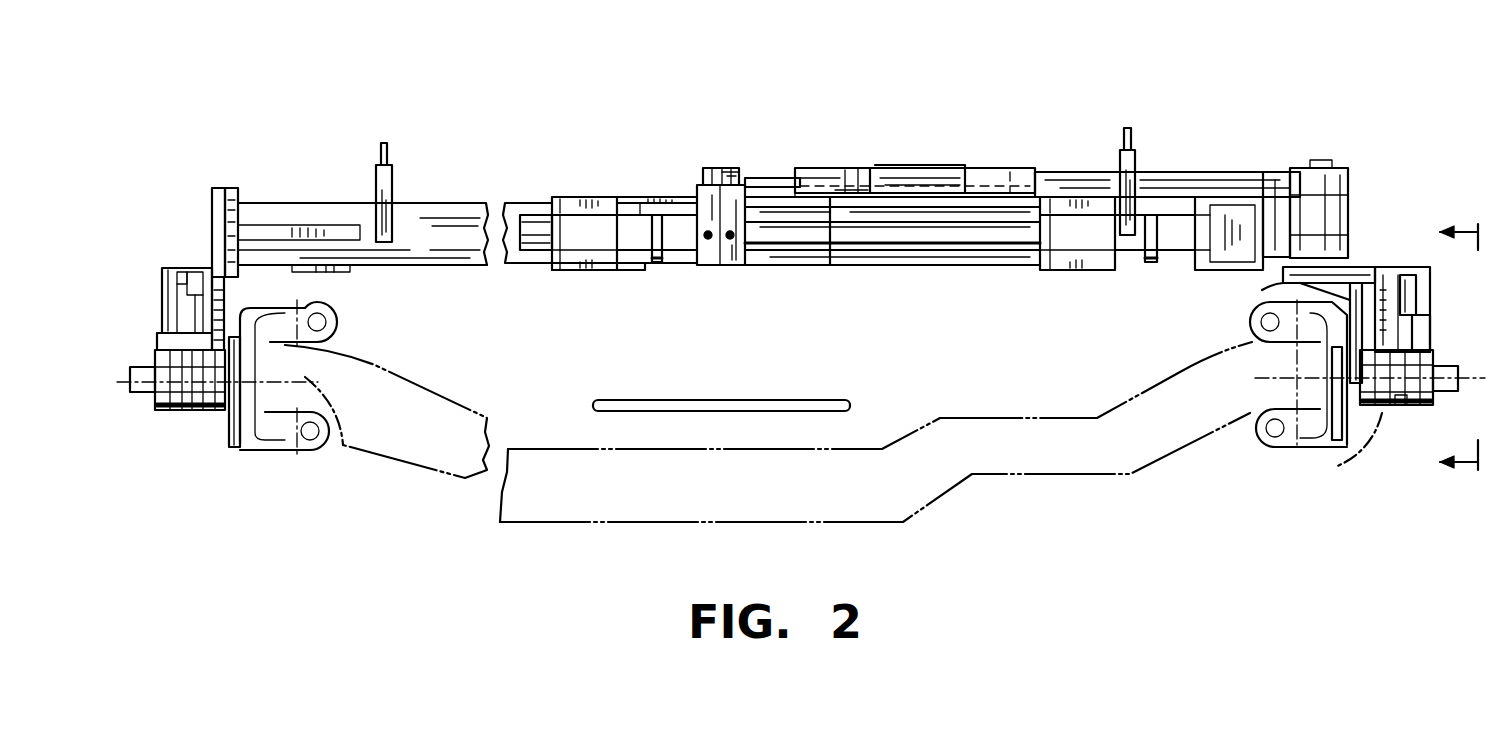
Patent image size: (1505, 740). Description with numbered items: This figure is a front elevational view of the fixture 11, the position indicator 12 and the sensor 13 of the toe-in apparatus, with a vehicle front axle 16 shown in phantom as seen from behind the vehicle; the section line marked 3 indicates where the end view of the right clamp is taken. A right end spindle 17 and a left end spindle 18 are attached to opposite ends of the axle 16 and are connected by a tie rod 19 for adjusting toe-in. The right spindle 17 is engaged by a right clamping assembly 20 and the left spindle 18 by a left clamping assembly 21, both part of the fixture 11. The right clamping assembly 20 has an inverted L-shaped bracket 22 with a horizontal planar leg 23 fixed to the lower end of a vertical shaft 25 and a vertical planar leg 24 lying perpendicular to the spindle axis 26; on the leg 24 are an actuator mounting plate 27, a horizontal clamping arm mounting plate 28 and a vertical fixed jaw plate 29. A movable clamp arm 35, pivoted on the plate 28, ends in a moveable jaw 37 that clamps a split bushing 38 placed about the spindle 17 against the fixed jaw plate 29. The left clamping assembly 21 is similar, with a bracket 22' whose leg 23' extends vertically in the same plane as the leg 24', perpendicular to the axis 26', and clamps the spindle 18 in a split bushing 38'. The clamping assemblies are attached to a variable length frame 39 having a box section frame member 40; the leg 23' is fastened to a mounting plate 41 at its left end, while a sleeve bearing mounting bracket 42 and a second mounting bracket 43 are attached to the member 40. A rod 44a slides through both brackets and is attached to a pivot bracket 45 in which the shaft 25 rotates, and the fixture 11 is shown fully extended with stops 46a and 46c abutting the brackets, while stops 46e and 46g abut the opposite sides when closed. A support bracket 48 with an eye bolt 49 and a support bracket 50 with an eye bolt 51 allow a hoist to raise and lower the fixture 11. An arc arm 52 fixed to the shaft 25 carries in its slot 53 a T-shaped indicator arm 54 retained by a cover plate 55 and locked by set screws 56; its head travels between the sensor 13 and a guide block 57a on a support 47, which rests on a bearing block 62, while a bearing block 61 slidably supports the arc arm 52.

The fixture 11 is at (815, 95).
The position indicator 12 is at (1200, 172).
The sensor 13 is at (722, 178).
The vehicle front axle 16 is at (415, 455).
The right end spindle 17 is at (1460, 395).
The left end spindle 18 is at (142, 400).
The tie rod 19 is at (762, 400).
The right clamping assembly 20 is at (1392, 405).
The left clamping assembly 21 is at (210, 400).
The inverted generally L-shaped bracket 22 is at (1346, 237).
The bracket 22' is at (174, 278).
The horizontally extending planar leg 23 is at (1248, 300).
The leg 23' is at (189, 258).
The vertically extending planar leg 24 is at (1311, 372).
The vertically extending leg 24' is at (301, 360).
The vertically extending shaft 25 is at (1355, 205).
The longitudinal axis 26 is at (1277, 420).
The longitudinal axis 26' is at (303, 442).
The actuator mounting plate 27 is at (1385, 275).
The clamping arm mounting plate 28 is at (1430, 345).
The fixed jaw plate 29 is at (1340, 443).
The movable clamp arm 35 is at (1418, 312).
The moveable jaw 37 is at (1402, 405).
The split bushing 38 is at (1463, 364).
The split bushing 38' is at (215, 342).
The variable length frame 39 is at (518, 203).
The box section frame member 40 is at (510, 263).
The mounting plate 41 is at (240, 190).
The sleeve bearing mounting bracket 42 is at (1068, 268).
The second sleeve bearing mounting bracket 43 is at (580, 268).
The rod 44a is at (945, 237).
The pivot bracket 45 is at (1280, 215).
The stop means 46a is at (1033, 210).
The stop means 46c is at (548, 200).
The stop means 46e is at (1153, 262).
The stop means 46g is at (658, 262).
The support 47 is at (722, 265).
The support bracket 48 is at (378, 183).
The eye bolt 49 is at (388, 150).
The support bracket 50 is at (1137, 152).
The eye bolt 51 is at (1127, 135).
The arc arm 52 is at (1250, 175).
The slot 53 is at (975, 188).
The position indicator arm 54 is at (762, 185).
The cover plate 55 is at (905, 168).
The set screws 56 is at (870, 185).
The guide block 57a is at (707, 168).
The bearing block 61 is at (820, 222).
The bearing block 62 is at (648, 200).
The section line 3- 3 is at (1463, 348).